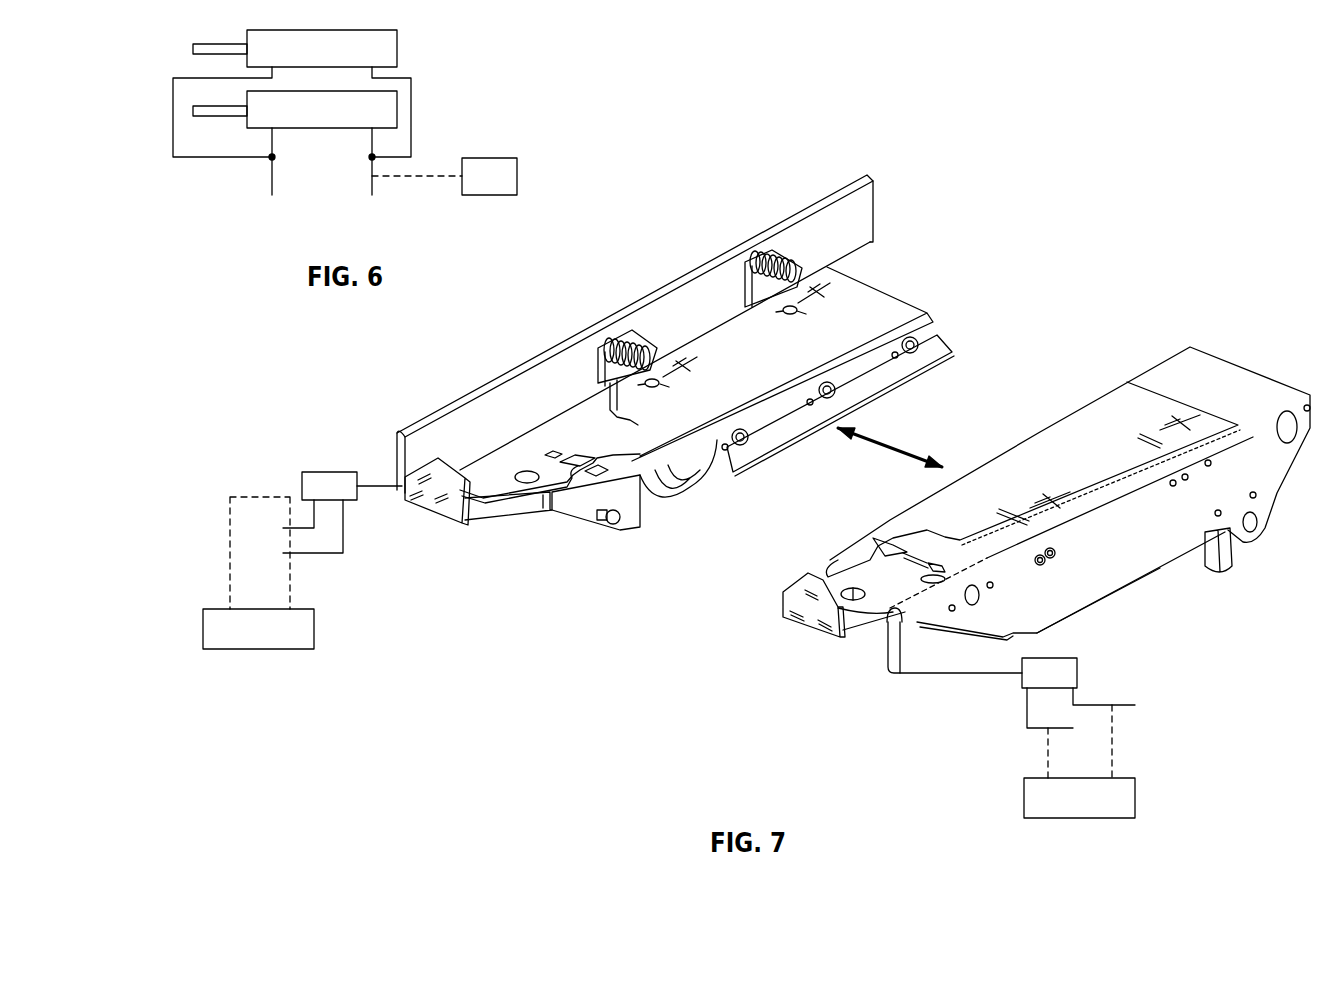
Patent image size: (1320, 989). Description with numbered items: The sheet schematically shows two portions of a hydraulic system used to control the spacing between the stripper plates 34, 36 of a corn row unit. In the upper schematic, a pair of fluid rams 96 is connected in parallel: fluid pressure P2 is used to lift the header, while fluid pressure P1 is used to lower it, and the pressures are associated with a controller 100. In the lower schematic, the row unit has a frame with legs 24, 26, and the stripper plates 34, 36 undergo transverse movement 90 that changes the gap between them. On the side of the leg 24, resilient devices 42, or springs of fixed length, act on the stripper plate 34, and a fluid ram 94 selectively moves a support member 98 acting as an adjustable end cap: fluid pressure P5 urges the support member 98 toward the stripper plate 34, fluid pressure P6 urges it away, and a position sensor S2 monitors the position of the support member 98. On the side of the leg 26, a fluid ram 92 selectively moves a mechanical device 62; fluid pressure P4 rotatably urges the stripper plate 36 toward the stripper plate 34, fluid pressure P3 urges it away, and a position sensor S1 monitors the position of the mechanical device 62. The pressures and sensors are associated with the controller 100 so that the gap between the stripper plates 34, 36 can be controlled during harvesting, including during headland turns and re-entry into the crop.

In FIG. 6, the fluid ram 96 is at (309, 60).
In FIG. 6, the controller 100 is at (487, 158).
In FIG. 7, the controller 100 is at (1024, 800).
In FIG. 7, the support member 98 is at (697, 263).
In FIG. 7, the resilient device 42 is at (638, 343).
In FIG. 7, the leg 24 is at (520, 458).
In FIG. 7, the stripper plate 34 is at (732, 383).
In FIG. 7, the leg 26 is at (1046, 493).
In FIG. 7, the stripper plate 36 is at (1077, 473).
In FIG. 7, the transverse movement 90 is at (890, 446).
In FIG. 7, the mechanical device 62 is at (1105, 512).
In FIG. 7, the fluid ram 92 is at (1050, 658).
In FIG. 7, the fluid ram 94 is at (330, 472).
In FIG. 7, the position sensor S1 is at (892, 675).
In FIG. 7, the position sensor S2 is at (397, 490).
In FIG. 6, the fluid pressure P1 is at (274, 215).
In FIG. 6, the fluid pressure P2 is at (374, 215).
In FIG. 7, the fluid pressure P3 is at (1151, 705).
In FIG. 7, the fluid pressure P4 is at (1089, 728).
In FIG. 7, the fluid pressure P5 is at (261, 528).
In FIG. 7, the fluid pressure P6 is at (261, 553).